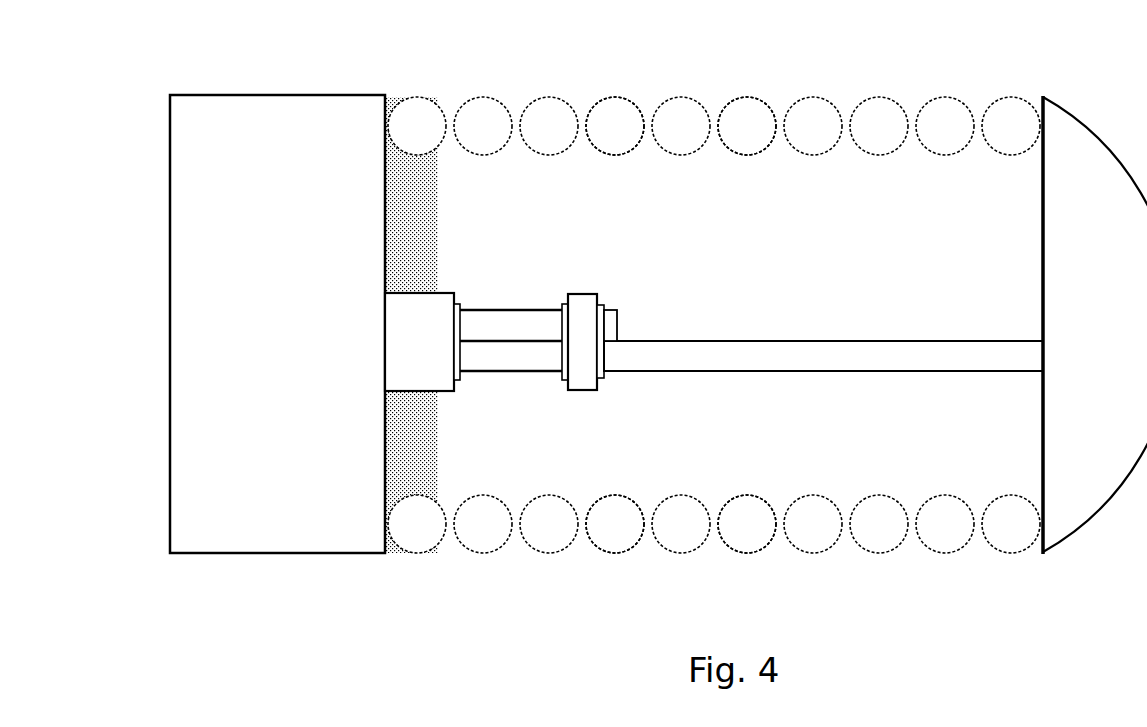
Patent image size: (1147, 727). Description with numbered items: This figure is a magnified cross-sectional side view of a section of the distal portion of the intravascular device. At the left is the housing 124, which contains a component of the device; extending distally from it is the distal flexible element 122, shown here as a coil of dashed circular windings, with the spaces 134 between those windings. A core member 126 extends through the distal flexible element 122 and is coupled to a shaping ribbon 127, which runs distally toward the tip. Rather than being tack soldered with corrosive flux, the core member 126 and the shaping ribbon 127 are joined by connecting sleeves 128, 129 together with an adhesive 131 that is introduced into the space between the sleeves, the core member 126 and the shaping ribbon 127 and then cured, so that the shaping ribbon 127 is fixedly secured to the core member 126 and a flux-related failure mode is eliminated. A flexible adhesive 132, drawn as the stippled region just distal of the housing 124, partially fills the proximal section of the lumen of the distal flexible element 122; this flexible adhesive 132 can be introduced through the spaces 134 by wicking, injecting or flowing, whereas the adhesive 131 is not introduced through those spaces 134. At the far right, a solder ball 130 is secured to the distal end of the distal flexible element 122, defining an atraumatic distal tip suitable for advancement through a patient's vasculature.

The distal flexible element 122 is at (818, 97).
The housing 124 is at (280, 95).
The core member 126 is at (612, 309).
The shaping ribbon 127 is at (657, 372).
The connecting sleeve 128 is at (433, 392).
The connecting sleeve 129 is at (578, 392).
The solder ball 130 is at (1057, 553).
The adhesive 131 is at (461, 304).
The flexible adhesive 132 is at (428, 225).
The spaces 134 is at (585, 98).